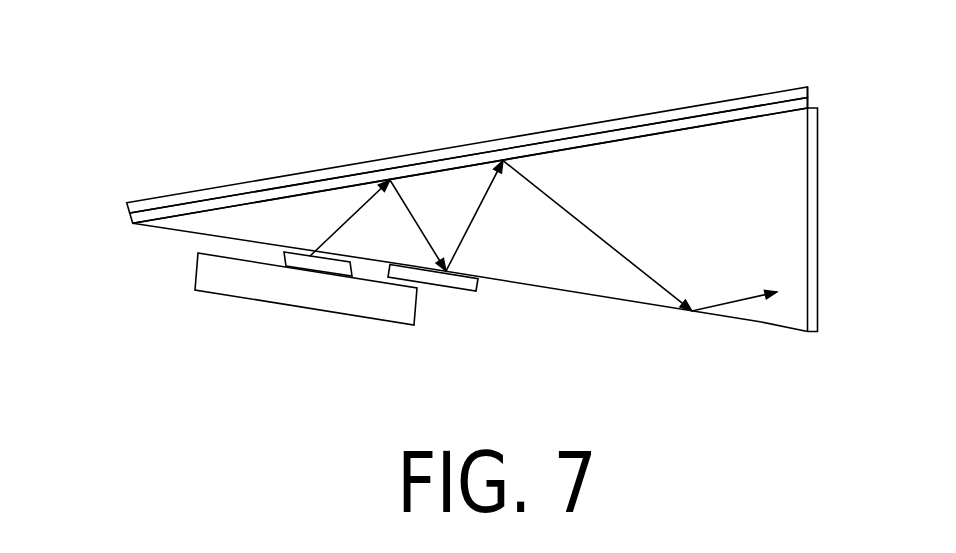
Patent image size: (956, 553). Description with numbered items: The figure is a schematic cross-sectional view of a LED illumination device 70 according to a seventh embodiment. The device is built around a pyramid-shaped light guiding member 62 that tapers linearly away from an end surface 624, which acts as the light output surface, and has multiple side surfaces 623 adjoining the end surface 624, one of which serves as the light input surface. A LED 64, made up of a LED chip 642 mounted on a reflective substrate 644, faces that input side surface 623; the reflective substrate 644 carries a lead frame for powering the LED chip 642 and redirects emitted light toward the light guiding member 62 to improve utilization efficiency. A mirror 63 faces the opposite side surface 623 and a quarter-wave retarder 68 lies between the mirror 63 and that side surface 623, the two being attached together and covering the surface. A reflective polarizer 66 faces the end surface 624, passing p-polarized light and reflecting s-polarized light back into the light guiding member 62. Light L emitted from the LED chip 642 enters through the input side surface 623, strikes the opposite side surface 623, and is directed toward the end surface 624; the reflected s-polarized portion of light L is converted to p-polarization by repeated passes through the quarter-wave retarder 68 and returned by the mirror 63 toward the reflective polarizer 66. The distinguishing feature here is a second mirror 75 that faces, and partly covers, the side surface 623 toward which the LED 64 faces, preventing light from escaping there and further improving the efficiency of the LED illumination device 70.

The LED illumination device 70 is at (531, 38).
The light guiding member 62 is at (470, 217).
The side surface 623 is at (639, 312).
The end surface 624 is at (796, 143).
The mirror 63 is at (200, 193).
The quarter-wave retarder 68 is at (280, 192).
The reflective polarizer 66 is at (813, 117).
The LED 64 is at (230, 289).
The LED chip 642 is at (287, 260).
The reflective substrate 644 is at (223, 288).
The second mirror 75 is at (462, 280).
The light L is at (539, 236).